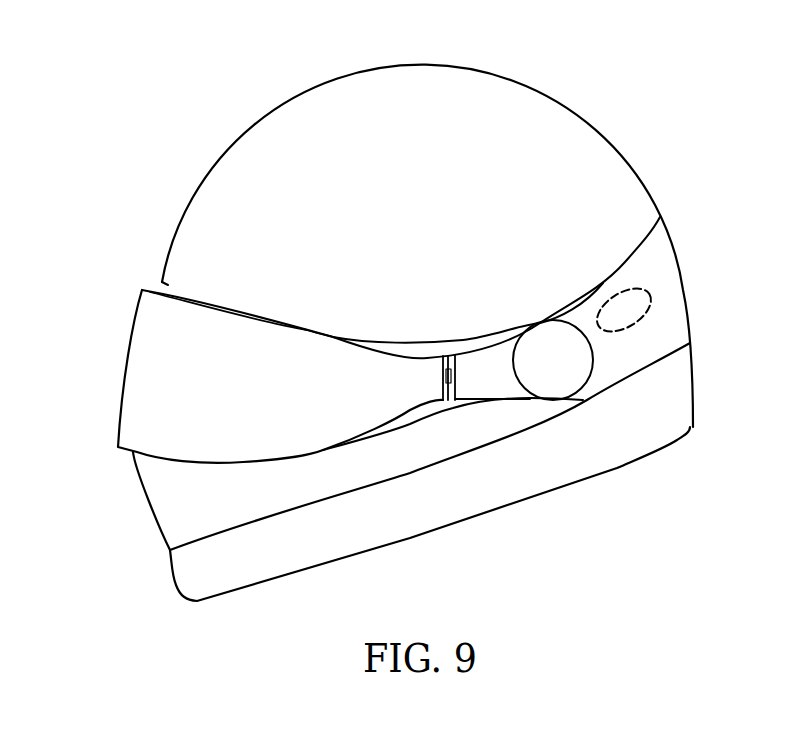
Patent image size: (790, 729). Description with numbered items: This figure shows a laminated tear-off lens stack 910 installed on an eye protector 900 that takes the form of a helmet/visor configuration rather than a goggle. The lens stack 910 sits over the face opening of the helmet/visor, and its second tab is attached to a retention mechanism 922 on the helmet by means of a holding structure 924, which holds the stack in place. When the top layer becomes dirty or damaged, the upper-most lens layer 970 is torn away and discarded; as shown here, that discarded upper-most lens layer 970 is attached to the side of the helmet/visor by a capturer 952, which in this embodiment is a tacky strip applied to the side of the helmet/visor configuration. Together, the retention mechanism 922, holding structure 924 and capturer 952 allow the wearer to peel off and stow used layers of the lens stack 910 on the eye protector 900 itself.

The eye protector 900 is at (409, 75).
The lens stack 910 is at (120, 366).
The retention mechanism 922 is at (443, 362).
The holding structure 924 is at (452, 378).
The capturer 952 is at (608, 298).
The upper-most lens layer 970 is at (640, 272).